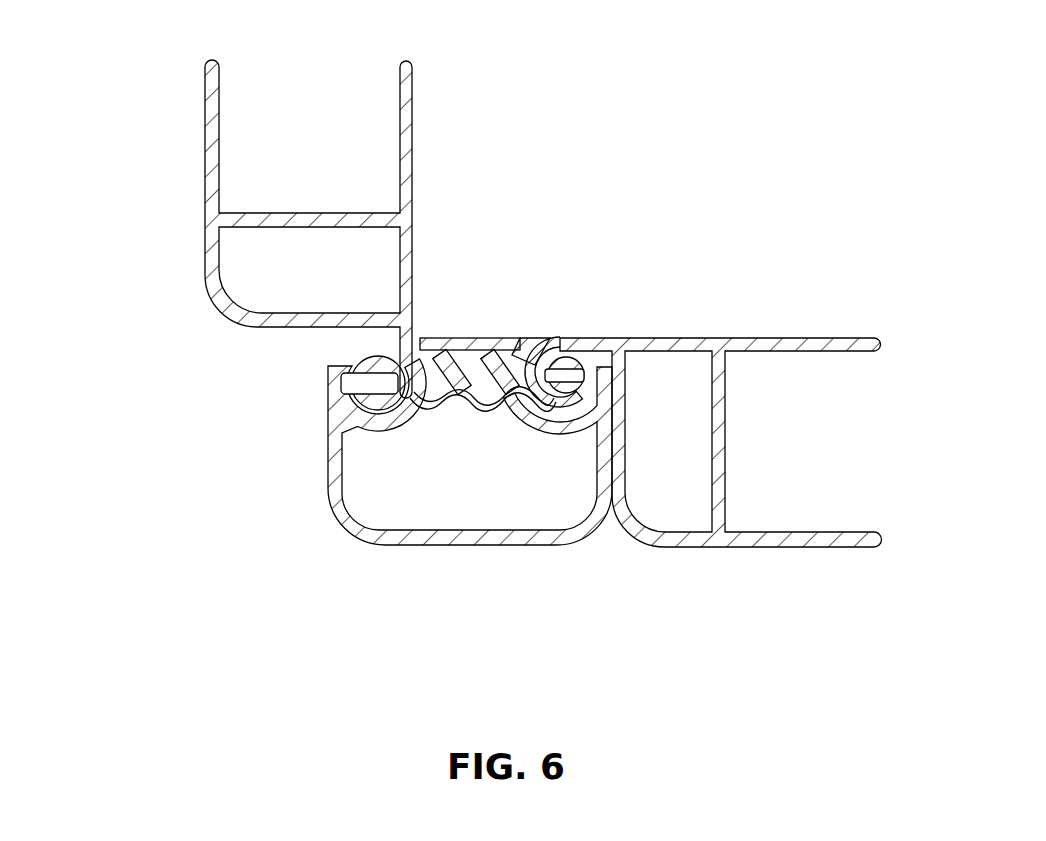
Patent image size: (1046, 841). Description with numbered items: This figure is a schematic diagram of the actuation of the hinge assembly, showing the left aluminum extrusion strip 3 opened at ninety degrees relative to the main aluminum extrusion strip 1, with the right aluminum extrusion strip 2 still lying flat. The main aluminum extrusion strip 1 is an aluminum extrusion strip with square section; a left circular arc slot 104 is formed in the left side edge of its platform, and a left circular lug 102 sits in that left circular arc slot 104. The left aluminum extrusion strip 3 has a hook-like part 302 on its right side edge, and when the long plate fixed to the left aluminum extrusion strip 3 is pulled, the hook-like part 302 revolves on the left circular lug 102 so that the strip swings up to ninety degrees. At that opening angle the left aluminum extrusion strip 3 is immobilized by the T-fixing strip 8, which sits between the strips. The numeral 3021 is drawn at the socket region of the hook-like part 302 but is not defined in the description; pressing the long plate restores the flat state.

The main aluminum extrusion strip 1 is at (487, 543).
The right aluminum extrusion strip 2 is at (822, 350).
The left aluminum extrusion strip 3 is at (207, 135).
The T-fixing strip 8 is at (445, 378).
The left circular lug 102 is at (357, 358).
The left circular arc slot 104 is at (400, 413).
The hook-like part 302 is at (330, 497).
The arc-shaped socket 3021 is at (343, 410).